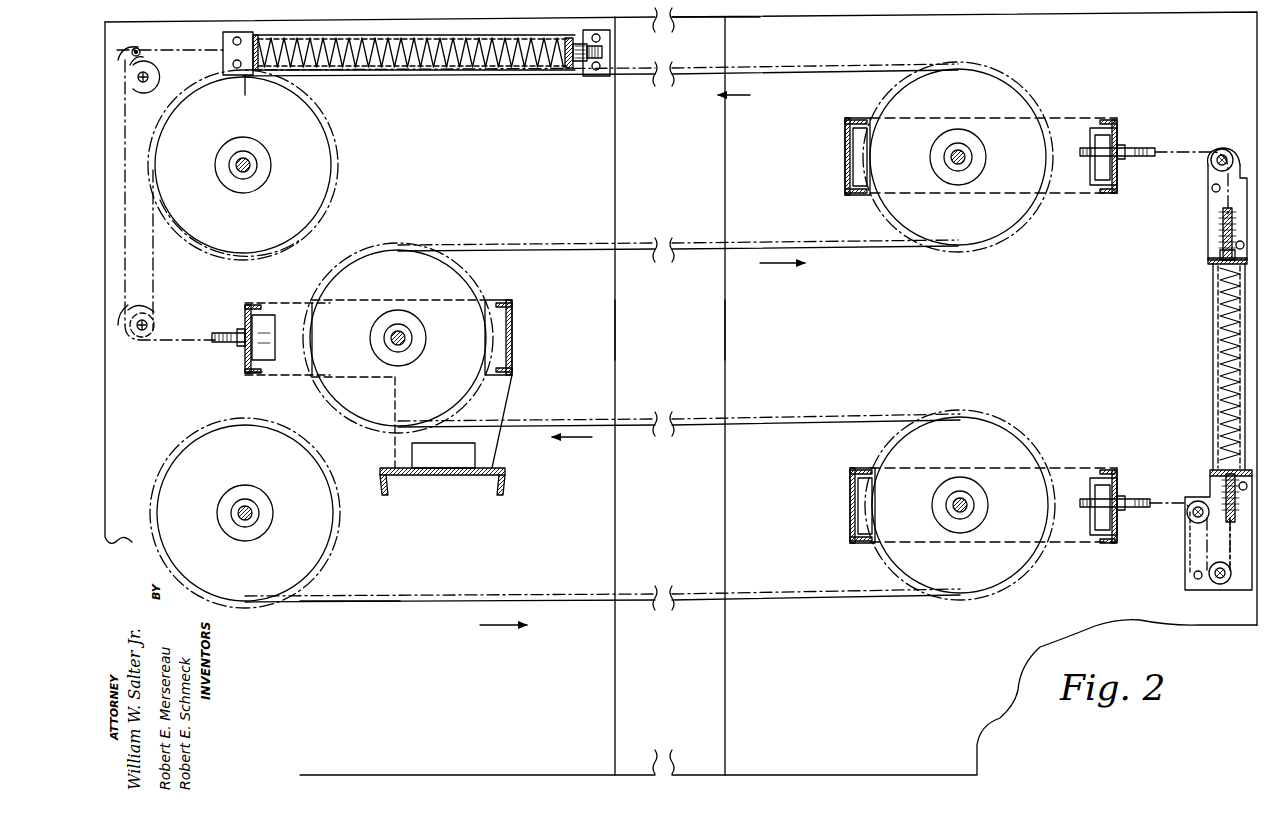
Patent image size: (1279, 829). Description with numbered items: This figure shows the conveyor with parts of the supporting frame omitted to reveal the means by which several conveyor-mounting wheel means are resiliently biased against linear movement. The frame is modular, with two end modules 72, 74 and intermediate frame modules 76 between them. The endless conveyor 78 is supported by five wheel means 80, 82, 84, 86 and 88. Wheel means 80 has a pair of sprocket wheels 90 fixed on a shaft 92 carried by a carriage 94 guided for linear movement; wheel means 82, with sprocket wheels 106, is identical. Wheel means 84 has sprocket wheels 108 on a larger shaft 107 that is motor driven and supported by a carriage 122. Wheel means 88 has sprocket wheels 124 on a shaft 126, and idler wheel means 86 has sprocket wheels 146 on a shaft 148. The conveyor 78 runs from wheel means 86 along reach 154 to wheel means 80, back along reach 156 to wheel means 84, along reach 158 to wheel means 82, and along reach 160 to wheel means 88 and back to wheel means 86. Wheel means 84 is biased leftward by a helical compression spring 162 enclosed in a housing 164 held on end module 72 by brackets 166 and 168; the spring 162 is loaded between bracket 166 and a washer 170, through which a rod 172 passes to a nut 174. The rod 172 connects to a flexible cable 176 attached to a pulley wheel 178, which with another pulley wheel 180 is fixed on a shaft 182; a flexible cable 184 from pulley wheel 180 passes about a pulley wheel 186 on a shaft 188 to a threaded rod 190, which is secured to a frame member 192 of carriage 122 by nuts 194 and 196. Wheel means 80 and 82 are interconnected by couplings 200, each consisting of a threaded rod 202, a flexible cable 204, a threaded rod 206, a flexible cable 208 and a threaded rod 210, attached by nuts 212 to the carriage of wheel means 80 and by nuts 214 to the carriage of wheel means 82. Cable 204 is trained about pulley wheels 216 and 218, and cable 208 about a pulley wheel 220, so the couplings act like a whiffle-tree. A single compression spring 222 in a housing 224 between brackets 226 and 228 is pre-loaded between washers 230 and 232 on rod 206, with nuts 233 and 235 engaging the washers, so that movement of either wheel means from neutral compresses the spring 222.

The end module 72 is at (588, 345).
The end module 74 is at (748, 332).
The intermediate frame module 76 is at (705, 30).
The endless conveyor 78 is at (425, 605).
The wheel means 80 is at (978, 572).
The wheel means 82 is at (990, 218).
The wheel means 84 is at (445, 285).
The wheel means 86 is at (310, 530).
The wheel means 88 is at (308, 148).
The sprocket wheel 90 is at (1008, 450).
The shaft 92 is at (957, 502).
The carriage 94 is at (1080, 472).
The sprocket wheel 106 is at (882, 210).
The shaft 107 is at (404, 345).
The sprocket wheel 108 is at (380, 420).
The carriage 122 is at (318, 310).
The sprocket wheel 124 is at (222, 248).
The shaft 126 is at (242, 160).
The sprocket wheel 146 is at (305, 565).
The shaft 148 is at (252, 508).
The conveyor reach 154 is at (558, 590).
The conveyor reach 156 is at (832, 418).
The conveyor reach 158 is at (555, 246).
The conveyor reach 160 is at (805, 72).
The helical compression spring 162 is at (485, 70).
The housing 164 is at (528, 70).
The bracket 166 is at (222, 62).
The bracket 168 is at (600, 74).
The washer 170 is at (568, 68).
The rod 172 is at (604, 50).
The nut 174 is at (576, 75).
The flexible cable 176 is at (245, 78).
The pulley wheel 178 is at (133, 48).
The pulley wheel 180 is at (145, 92).
The shaft 182 is at (130, 53).
The flexible cable 184 is at (118, 335).
The pulley wheel 186 is at (150, 322).
The shaft 188 is at (148, 326).
The threaded rod 190 is at (222, 345).
The frame member 192 is at (246, 372).
The nut 194 is at (246, 325).
The nut 196 is at (265, 318).
The coupling 200 is at (1215, 228).
The threaded rod 202 is at (1175, 510).
The flexible cable 204 is at (1215, 555).
The threaded rod 206 is at (1213, 350).
The flexible cable 208 is at (1180, 150).
The threaded rod 210 is at (1140, 148).
The nut 212 is at (1127, 498).
The nut 214 is at (1105, 170).
The pulley wheel 216 is at (1190, 515).
The pulley wheel 218 is at (1219, 586).
The pulley wheel 220 is at (1224, 150).
The compression spring 222 is at (1214, 376).
The housing 224 is at (1216, 402).
The bracket 226 is at (1195, 540).
The bracket 228 is at (1208, 238).
The washer 230 is at (1212, 468).
The washer 232 is at (1212, 266).
The nut 233 is at (1226, 478).
The nut 235 is at (1220, 252).